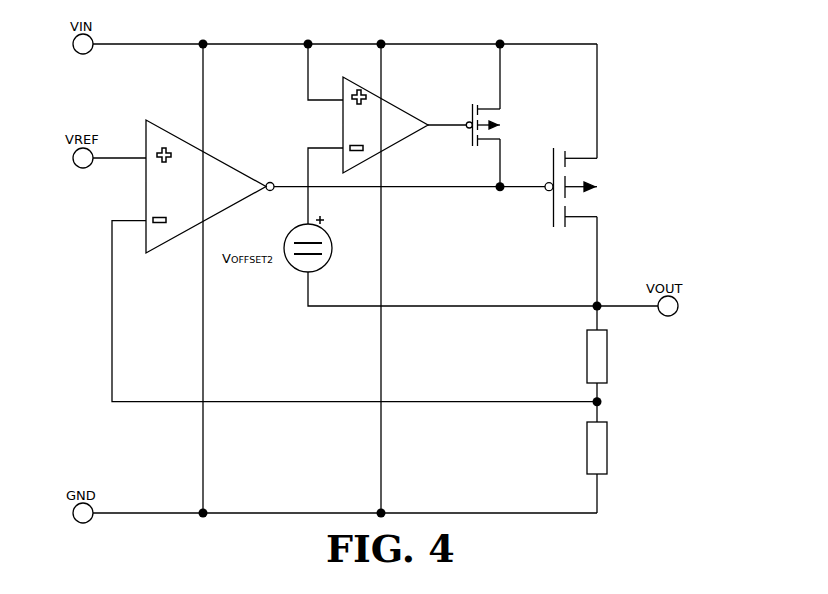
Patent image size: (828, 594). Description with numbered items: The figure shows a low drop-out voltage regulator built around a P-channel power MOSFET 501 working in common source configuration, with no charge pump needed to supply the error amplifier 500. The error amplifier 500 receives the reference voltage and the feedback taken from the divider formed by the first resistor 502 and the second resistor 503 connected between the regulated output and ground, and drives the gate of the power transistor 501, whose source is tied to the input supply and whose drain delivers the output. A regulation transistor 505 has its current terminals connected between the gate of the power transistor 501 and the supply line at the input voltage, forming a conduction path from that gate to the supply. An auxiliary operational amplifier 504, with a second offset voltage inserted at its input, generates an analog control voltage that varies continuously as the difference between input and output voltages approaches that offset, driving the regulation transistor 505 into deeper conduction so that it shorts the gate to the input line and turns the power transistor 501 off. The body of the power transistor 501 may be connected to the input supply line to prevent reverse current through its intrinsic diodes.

The error amplifier 500 is at (204, 167).
The P-channel power MOSFET 501 is at (570, 183).
The resistor R1 502 is at (593, 356).
The resistor R2 503 is at (593, 448).
The auxiliary operational amplifier 504 is at (404, 122).
The regulation transistor 505 is at (483, 115).